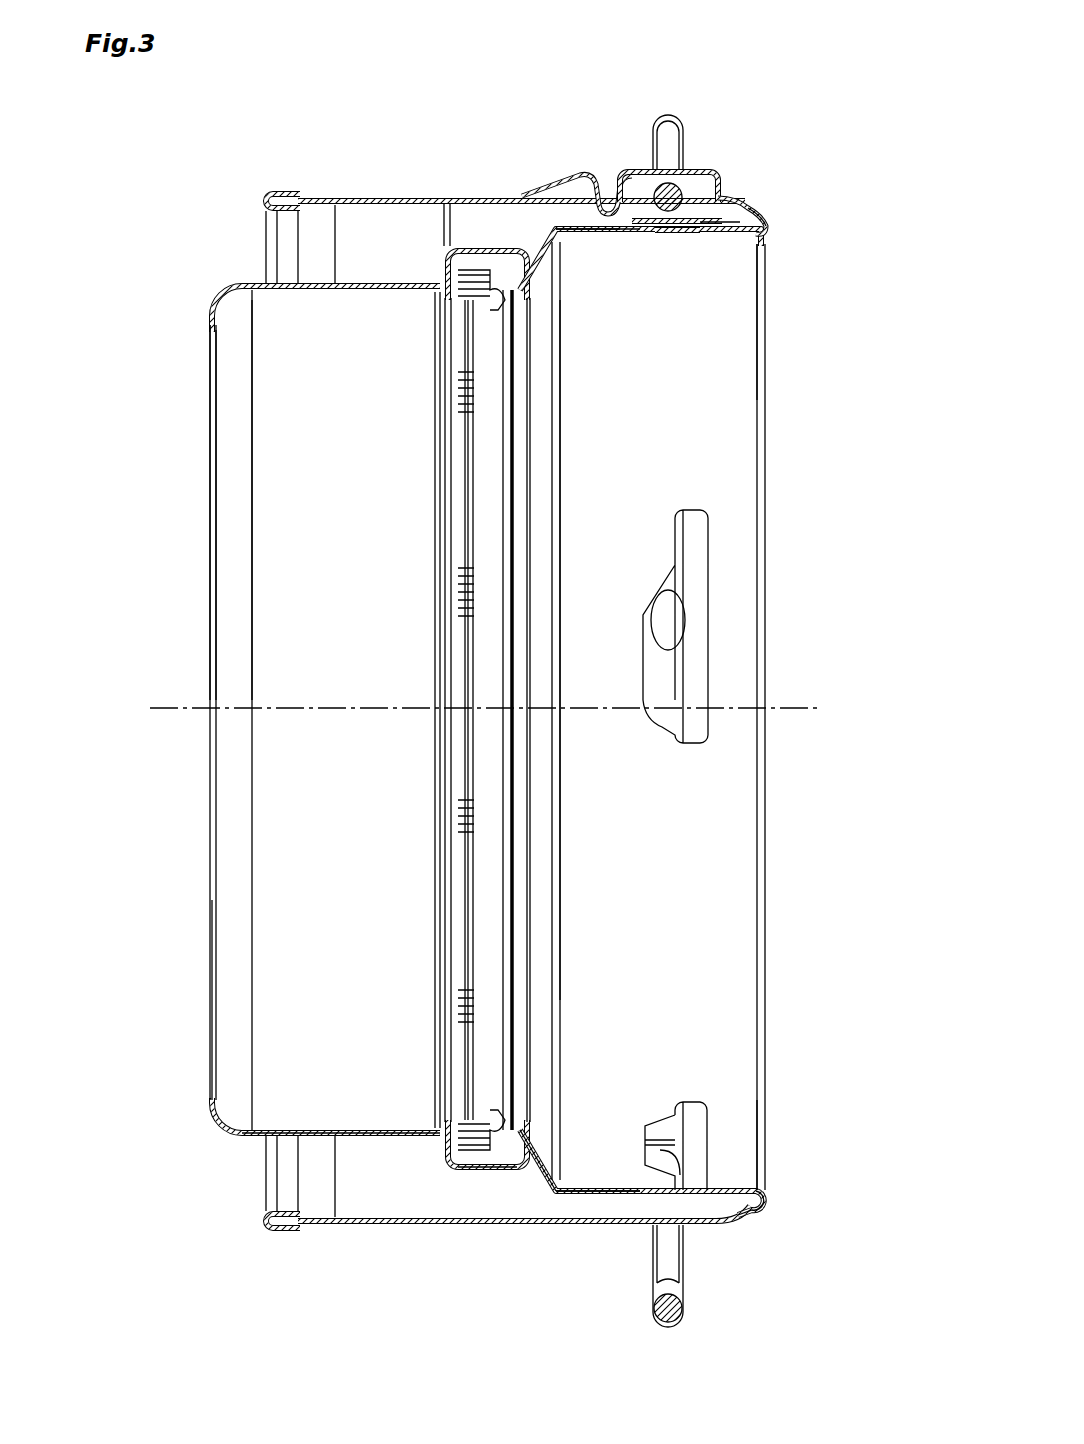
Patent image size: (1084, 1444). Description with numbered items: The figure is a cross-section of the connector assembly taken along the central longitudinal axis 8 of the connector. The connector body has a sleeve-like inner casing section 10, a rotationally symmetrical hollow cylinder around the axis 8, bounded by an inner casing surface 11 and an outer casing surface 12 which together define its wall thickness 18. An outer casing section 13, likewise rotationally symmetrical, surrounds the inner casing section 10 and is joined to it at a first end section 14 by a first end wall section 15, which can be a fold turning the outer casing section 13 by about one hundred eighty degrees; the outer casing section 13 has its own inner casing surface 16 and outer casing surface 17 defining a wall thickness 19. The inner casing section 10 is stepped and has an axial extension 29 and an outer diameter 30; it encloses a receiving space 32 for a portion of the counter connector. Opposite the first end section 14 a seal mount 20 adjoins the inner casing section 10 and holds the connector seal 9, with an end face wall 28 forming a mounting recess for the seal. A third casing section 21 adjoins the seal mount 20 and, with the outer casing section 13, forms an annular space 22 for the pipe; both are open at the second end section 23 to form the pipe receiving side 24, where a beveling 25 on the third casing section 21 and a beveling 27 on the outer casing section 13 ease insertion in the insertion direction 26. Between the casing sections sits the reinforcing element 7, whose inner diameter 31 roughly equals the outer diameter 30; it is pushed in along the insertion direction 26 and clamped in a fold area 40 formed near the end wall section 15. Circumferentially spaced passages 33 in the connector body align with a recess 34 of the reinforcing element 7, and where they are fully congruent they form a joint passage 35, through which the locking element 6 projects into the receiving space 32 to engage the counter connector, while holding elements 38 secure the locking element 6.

The locking element 6 is at (668, 128).
The reinforcing element 7 is at (742, 210).
The central longitudinal axis 8 is at (822, 706).
The connector seal 9 is at (484, 250).
The inner casing section 10 is at (712, 240).
The inner casing surface 11 is at (578, 238).
The outer casing surface 12 is at (560, 198).
The outer casing section 13 is at (571, 226).
The first end section 14 is at (802, 228).
The first end wall section 15 is at (787, 212).
The inner casing surface 16 is at (558, 1200).
The outer casing surface 17 is at (546, 1226).
The wall thickness 18 is at (617, 1125).
The wall thickness 19 is at (374, 1152).
The seal mount 20 is at (452, 1168).
The third casing section 21 is at (318, 1136).
The annular space 22 is at (372, 232).
The second end section 23 is at (178, 187).
The pipe receiving side 24 is at (222, 238).
The beveling 25 is at (192, 1126).
The insertion direction 26 is at (192, 286).
The beveling 27 is at (256, 200).
The end face wall 28 is at (442, 262).
The axial extension 29 is at (553, 1026).
The outer diameter 30 is at (583, 1190).
The inner diameter 31 is at (737, 1190).
The receiving space 32 is at (732, 403).
The passage 33 is at (697, 253).
The recess 34 is at (692, 198).
The joint passage 35 is at (704, 243).
The holding element 38 is at (641, 168).
The fold area 40 is at (758, 1216).